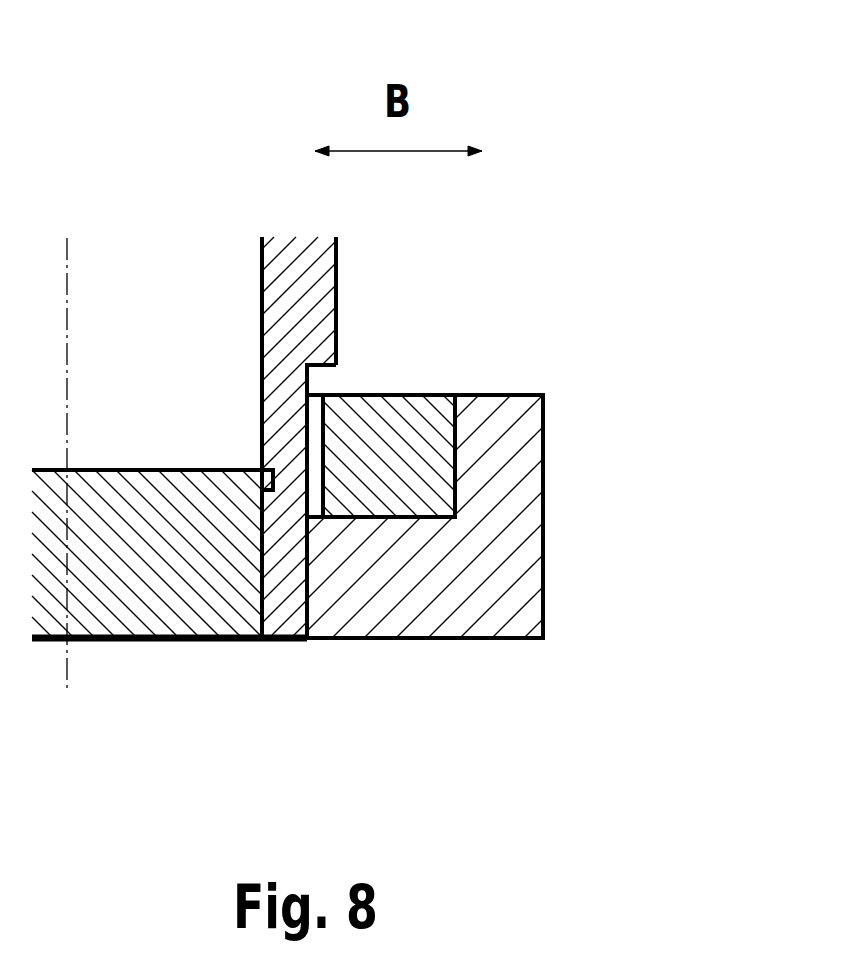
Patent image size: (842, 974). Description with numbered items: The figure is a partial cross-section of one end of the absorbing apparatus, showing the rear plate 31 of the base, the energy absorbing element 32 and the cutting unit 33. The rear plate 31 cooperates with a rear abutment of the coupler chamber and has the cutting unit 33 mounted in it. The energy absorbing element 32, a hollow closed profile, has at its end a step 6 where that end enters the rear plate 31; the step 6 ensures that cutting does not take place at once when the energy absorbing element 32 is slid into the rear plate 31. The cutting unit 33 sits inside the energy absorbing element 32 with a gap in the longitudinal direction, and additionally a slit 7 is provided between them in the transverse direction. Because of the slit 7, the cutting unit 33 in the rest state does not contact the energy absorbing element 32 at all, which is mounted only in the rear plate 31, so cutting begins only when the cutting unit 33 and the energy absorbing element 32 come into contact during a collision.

The energy absorbing element 32 is at (295, 308).
The step/recess 6 is at (325, 383).
The slit 7 is at (317, 475).
The rear plate 31 is at (478, 605).
The cutting unit 33 is at (422, 462).